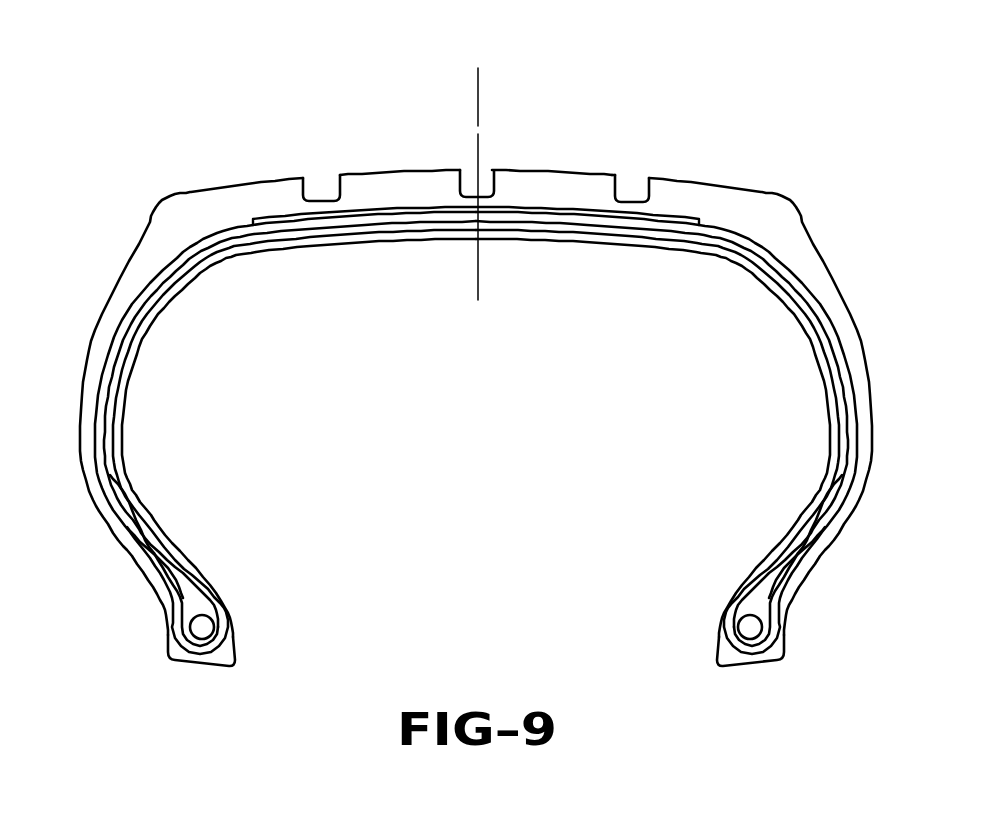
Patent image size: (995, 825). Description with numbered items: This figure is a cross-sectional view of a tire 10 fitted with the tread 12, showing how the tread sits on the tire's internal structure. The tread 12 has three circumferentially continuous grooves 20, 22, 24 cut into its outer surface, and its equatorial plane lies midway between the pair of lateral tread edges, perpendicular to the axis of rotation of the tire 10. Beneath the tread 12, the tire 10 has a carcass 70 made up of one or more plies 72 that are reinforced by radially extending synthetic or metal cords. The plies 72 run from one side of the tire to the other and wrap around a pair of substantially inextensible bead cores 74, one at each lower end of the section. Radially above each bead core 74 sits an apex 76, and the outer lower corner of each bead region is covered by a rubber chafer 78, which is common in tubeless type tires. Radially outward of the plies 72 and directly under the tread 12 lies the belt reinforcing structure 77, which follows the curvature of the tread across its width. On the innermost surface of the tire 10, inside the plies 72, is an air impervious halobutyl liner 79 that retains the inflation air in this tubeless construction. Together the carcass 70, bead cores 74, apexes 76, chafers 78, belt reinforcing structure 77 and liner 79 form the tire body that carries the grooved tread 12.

The tire 10 is at (100, 242).
The tread 12 is at (192, 216).
The circumferentially continuous groove 20 is at (322, 194).
The circumferentially continuous groove 22 is at (470, 182).
The circumferentially continuous groove 24 is at (628, 194).
The belt reinforcing structure 77 is at (542, 213).
The ply 72 is at (117, 352).
The liner 79 is at (127, 455).
The carcass 70 is at (82, 510).
The apex 76 is at (197, 598).
The bead core 74 is at (198, 628).
The chafer 78 is at (167, 656).